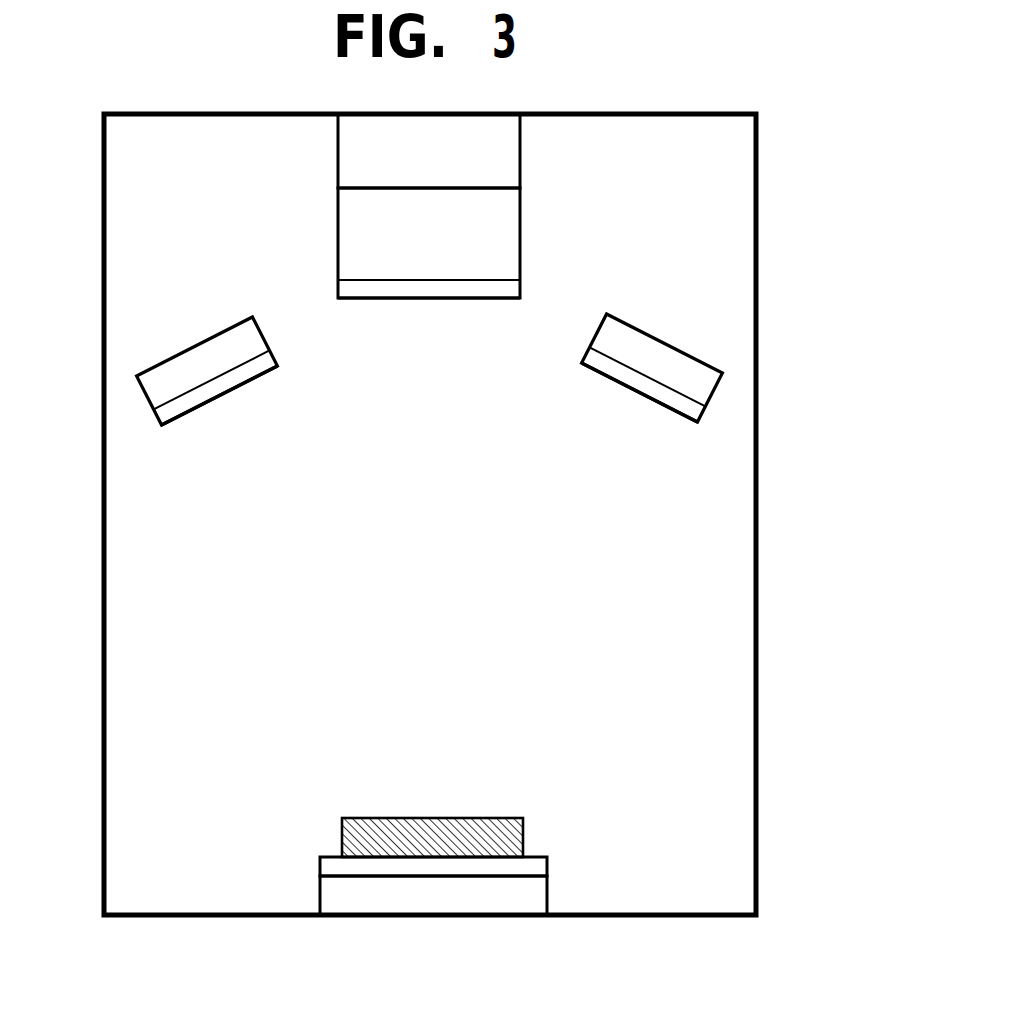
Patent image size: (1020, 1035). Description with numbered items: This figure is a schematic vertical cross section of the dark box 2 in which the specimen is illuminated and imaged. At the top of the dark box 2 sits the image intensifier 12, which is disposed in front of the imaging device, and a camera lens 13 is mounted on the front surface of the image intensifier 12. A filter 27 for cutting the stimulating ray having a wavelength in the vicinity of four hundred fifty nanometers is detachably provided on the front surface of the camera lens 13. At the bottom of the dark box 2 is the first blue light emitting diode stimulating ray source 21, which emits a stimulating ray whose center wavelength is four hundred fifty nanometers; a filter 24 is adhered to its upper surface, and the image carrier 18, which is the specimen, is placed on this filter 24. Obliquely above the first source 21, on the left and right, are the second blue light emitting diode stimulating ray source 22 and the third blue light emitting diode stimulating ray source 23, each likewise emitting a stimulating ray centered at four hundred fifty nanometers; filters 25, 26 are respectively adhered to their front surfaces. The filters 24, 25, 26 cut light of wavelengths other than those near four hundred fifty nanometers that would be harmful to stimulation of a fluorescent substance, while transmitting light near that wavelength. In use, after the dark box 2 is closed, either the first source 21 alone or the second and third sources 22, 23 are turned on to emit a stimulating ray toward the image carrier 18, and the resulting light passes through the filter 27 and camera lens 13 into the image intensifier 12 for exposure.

The dark box 2 is at (778, 540).
The image intensifier 12 is at (495, 152).
The camera lens 13 is at (470, 248).
The image carrier 18 is at (492, 830).
The first blue light emitting diode stimulating ray source 21 is at (448, 903).
The second blue light emitting diode stimulating ray source 22 is at (668, 373).
The third blue light emitting diode stimulating ray source 23 is at (188, 370).
The filter 24 is at (528, 867).
The filter 25 is at (677, 400).
The filter 26 is at (200, 397).
The filter 27 is at (438, 293).